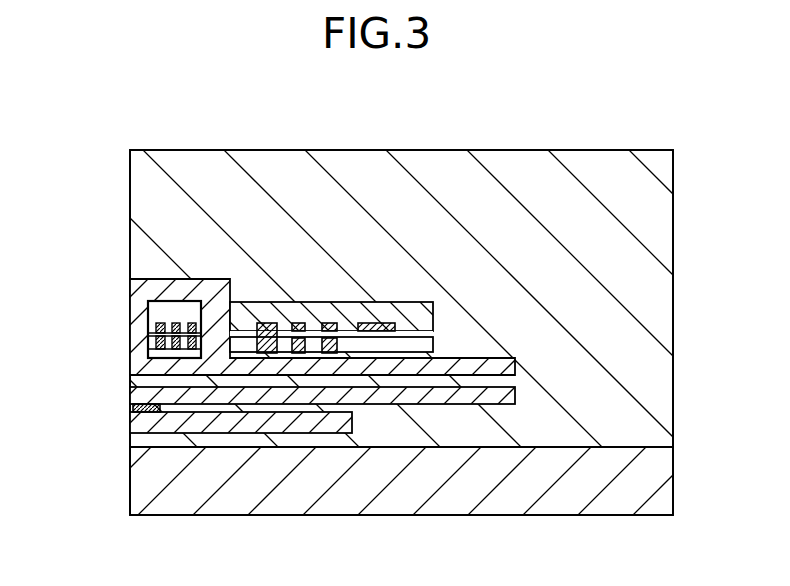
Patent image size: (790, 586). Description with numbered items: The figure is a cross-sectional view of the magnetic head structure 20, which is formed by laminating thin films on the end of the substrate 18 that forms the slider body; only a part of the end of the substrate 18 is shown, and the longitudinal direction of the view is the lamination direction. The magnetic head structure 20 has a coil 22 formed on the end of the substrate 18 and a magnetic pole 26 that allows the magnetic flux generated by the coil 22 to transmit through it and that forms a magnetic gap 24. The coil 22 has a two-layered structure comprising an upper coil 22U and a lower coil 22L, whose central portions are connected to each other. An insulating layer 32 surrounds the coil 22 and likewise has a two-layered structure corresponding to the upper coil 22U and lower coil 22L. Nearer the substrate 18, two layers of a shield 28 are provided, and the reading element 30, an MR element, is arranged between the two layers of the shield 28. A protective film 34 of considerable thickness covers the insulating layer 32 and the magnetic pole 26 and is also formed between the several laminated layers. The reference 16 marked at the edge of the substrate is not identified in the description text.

The magnetic head structure 20 is at (372, 136).
The protective film 34 is at (648, 223).
The magnetic pole 26 is at (140, 288).
The magnetic gap 24 is at (137, 307).
The coil 22 is at (67, 315).
The upper coil 22U is at (155, 327).
The lower coil 22L is at (155, 342).
The insulating layer 32 is at (427, 345).
The shield 28 is at (138, 389).
The reading element (MR element) 30 is at (135, 409).
The substrate 18 is at (395, 515).
The substrate surface 16 is at (130, 476).